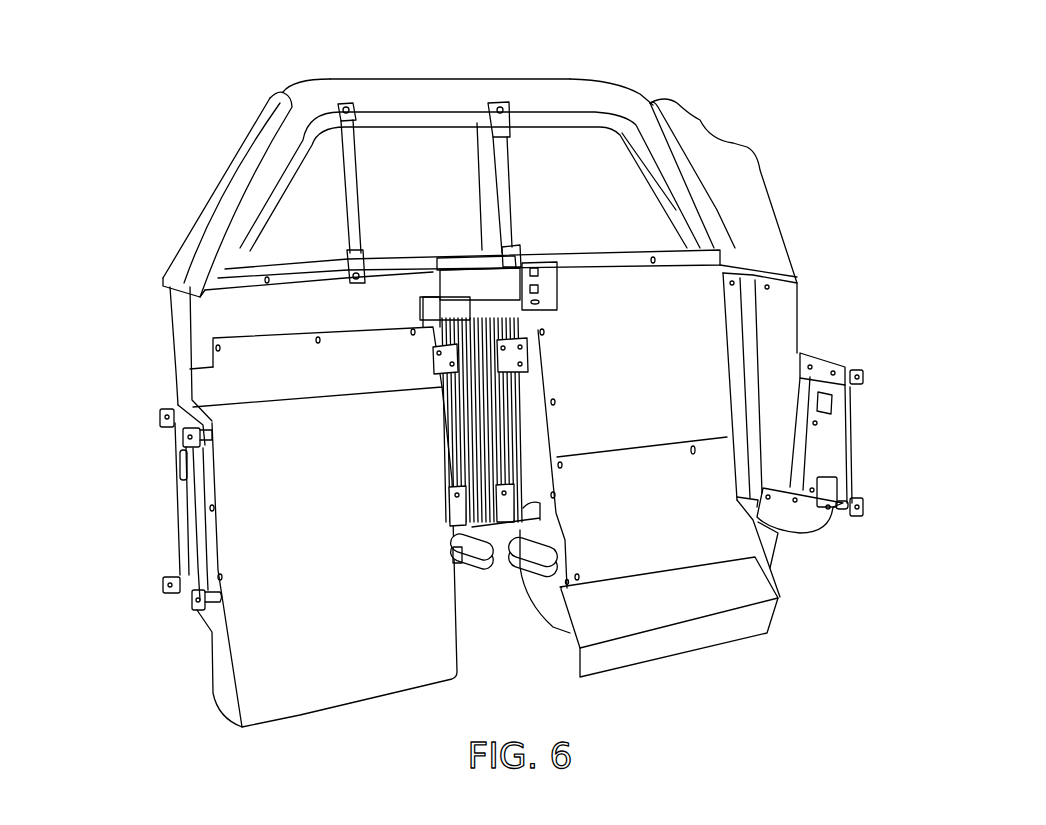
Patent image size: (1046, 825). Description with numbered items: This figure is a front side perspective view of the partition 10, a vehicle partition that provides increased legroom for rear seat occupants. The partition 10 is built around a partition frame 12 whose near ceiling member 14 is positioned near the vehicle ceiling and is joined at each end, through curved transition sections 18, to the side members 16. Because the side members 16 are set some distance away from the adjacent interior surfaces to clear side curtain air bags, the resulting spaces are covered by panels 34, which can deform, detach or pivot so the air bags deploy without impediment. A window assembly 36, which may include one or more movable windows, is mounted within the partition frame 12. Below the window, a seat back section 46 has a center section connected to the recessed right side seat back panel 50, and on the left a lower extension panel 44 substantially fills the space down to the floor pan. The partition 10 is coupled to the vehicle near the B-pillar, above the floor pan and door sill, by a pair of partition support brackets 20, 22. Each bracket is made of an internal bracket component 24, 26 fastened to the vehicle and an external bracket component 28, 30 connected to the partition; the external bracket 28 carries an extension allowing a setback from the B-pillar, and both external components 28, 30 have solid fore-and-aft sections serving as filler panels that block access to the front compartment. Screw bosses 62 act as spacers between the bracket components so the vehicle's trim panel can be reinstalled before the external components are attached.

The partition 10 is at (705, 68).
The partition frame 12 is at (539, 78).
The near ceiling member 14 is at (428, 82).
The side member 16 is at (200, 217).
The transition section 18 is at (296, 84).
The partition support bracket 20 is at (127, 345).
The partition support bracket 22 is at (853, 282).
The internal bracket component 24 is at (170, 407).
The internal bracket component 26 is at (832, 365).
The external bracket 28 is at (183, 371).
The external bracket component 30 is at (798, 307).
The panel 34 is at (237, 180).
The window assembly 36 is at (400, 263).
The lower extension panel 44 is at (710, 637).
The seat back section 46 is at (530, 600).
The recessed right side seat back panel 50 is at (403, 655).
The screw boss 62 is at (837, 509).